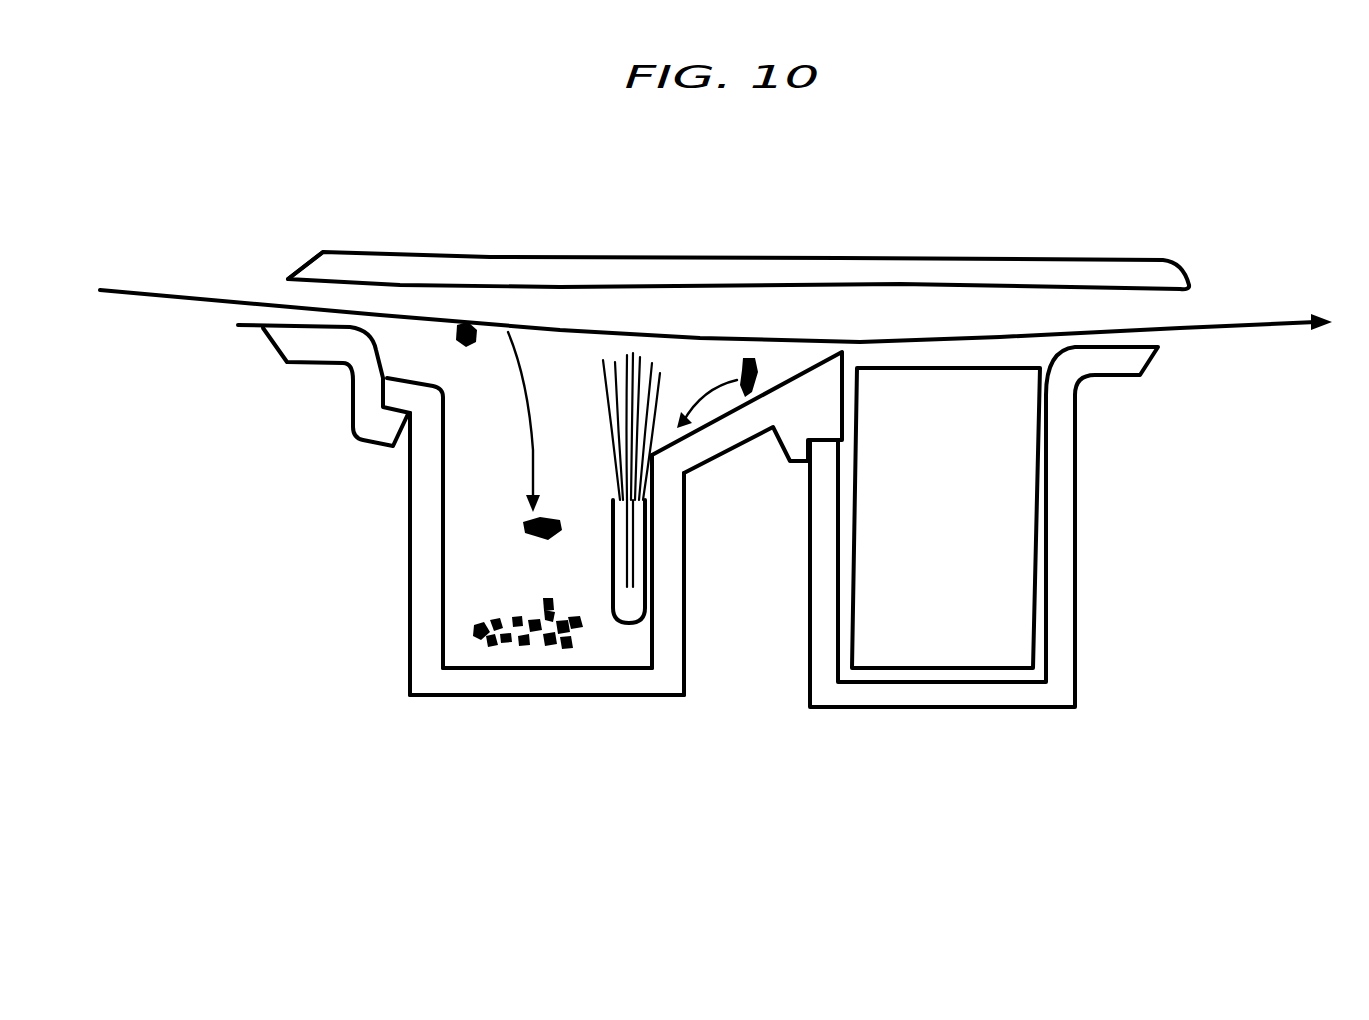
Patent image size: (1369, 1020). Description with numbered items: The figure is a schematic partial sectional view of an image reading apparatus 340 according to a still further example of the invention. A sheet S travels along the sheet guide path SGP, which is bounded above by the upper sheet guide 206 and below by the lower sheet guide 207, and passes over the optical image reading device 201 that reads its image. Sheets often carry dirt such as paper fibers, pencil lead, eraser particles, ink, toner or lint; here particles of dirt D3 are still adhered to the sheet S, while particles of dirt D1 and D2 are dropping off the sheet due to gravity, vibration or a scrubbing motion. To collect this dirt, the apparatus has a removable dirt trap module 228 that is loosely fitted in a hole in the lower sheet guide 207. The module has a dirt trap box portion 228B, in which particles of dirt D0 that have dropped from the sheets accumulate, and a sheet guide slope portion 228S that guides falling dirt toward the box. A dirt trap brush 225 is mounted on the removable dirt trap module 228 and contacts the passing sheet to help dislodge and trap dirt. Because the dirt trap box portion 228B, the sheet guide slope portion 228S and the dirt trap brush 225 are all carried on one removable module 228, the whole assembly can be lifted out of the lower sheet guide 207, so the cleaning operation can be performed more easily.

The image reading apparatus 340 is at (981, 138).
The sheet S is at (196, 302).
The sheet guide path SGP is at (353, 290).
The upper sheet guide 206 is at (940, 268).
The lower sheet guide 207 is at (305, 362).
The removable dirt trap module 228 is at (408, 537).
The dirt trap box portion 228B is at (457, 588).
The sheet guide slope portion 228S is at (790, 380).
The dirt trap brush 225 is at (653, 432).
The optical image reading device 201 is at (1020, 468).
The particles of dirt D0 is at (573, 628).
The particles of dirt D1 is at (534, 545).
The particles of dirt D2 is at (733, 369).
The particles of dirt D3 is at (453, 322).